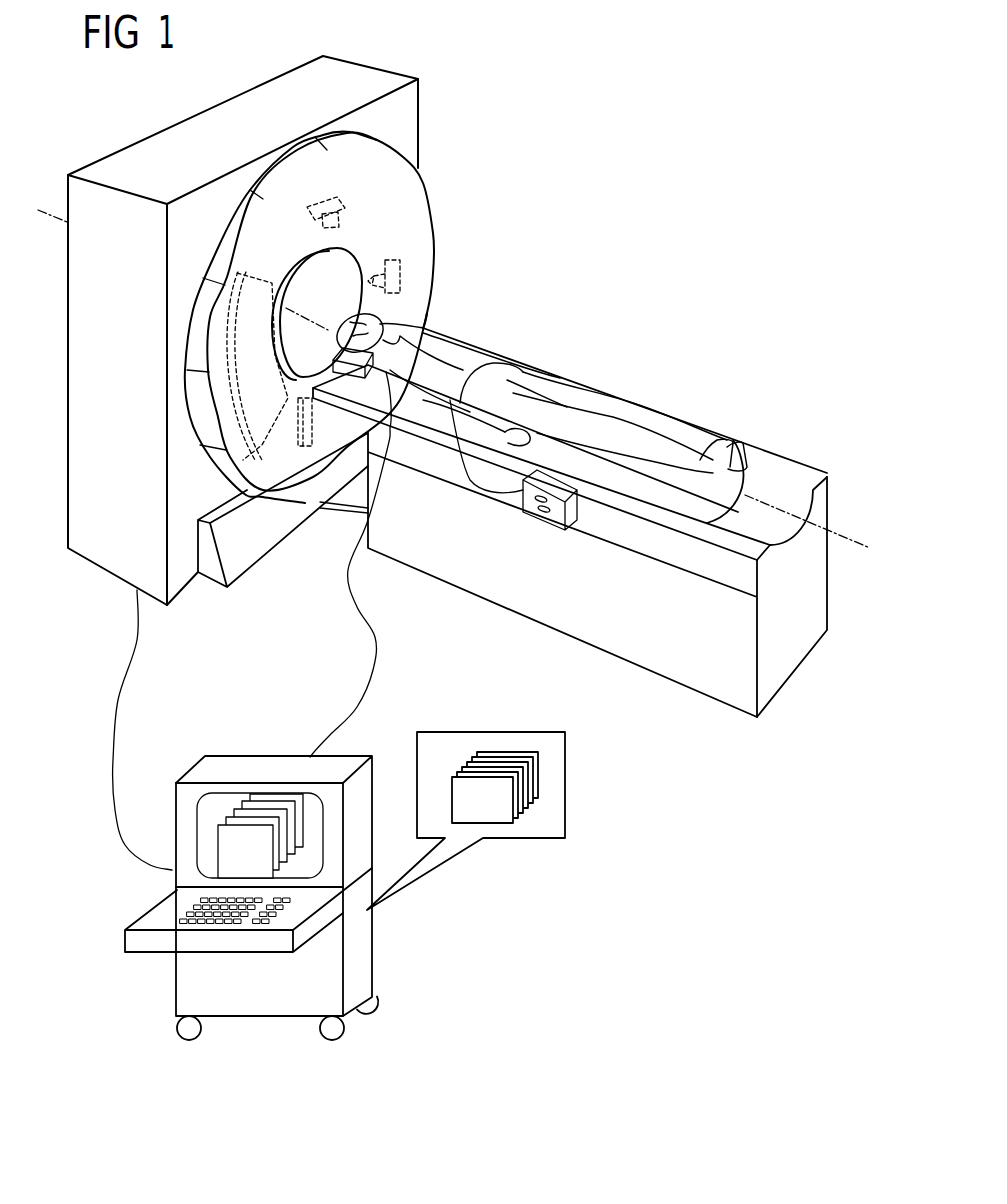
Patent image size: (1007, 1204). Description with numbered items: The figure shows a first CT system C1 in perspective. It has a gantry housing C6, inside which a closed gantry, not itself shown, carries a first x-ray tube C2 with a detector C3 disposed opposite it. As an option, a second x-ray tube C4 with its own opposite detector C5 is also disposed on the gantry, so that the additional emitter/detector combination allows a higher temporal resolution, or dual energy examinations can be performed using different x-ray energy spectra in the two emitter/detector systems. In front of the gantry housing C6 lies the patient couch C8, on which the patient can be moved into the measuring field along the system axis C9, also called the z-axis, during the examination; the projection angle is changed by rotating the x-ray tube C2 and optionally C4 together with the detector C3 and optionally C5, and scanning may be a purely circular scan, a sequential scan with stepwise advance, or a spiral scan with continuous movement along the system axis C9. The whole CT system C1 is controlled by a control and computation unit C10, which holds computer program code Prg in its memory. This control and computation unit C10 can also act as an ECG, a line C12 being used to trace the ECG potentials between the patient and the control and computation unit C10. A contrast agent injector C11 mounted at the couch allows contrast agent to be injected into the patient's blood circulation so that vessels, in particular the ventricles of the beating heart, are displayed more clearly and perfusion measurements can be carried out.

The CT system C1 is at (605, 238).
The first x-ray tube C2 is at (400, 273).
The detector C3 is at (257, 433).
The second x-ray tube C4 is at (343, 207).
The detector C5 is at (315, 433).
The gantry housing C6 is at (117, 558).
The patient couch C8 is at (713, 660).
The system axis C9 is at (862, 542).
The control and computation unit C10 is at (363, 952).
The contrast agent injector C11 is at (540, 513).
The line C12 is at (378, 670).
The computer program code Prg is at (497, 823).